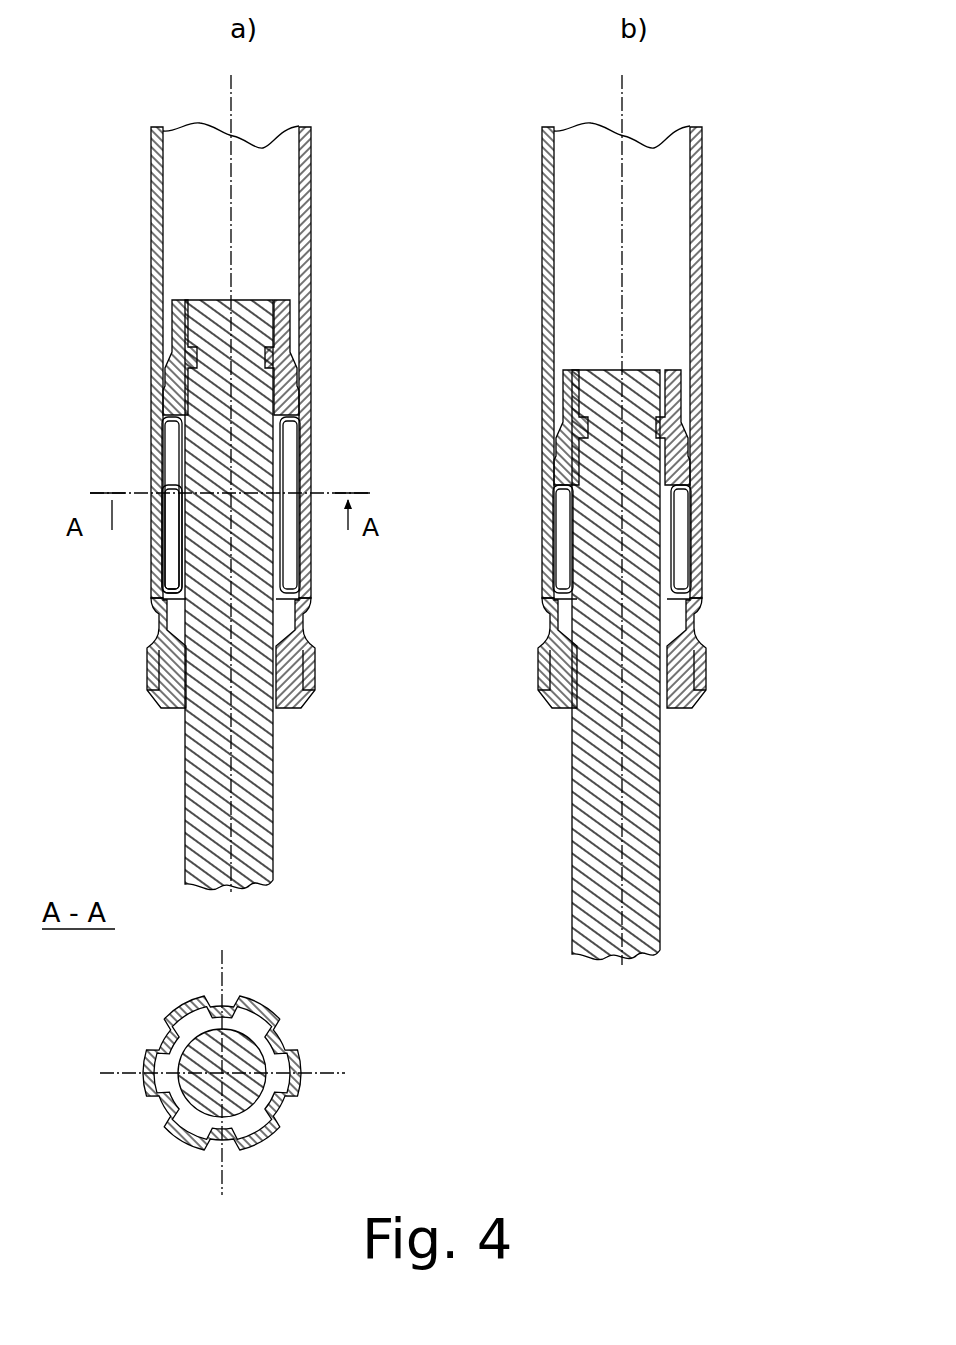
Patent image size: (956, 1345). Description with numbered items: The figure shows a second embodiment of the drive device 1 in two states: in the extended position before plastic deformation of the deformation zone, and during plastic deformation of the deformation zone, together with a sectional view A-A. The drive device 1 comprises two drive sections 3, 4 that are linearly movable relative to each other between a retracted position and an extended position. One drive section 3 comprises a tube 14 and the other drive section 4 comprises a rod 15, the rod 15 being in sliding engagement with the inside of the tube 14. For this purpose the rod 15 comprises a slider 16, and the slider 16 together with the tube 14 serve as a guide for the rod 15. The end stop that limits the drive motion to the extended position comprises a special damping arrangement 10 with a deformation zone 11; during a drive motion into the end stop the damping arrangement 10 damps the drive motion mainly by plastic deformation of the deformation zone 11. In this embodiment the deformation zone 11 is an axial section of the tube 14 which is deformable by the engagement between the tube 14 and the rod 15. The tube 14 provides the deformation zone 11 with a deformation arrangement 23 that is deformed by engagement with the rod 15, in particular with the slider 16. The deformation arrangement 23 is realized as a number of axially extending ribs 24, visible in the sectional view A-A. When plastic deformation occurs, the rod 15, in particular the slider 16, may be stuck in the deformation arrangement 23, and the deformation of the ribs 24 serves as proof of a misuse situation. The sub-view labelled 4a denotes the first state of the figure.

The drive device 1 is at (105, 215).
The drive section 3 is at (481, 638).
The tube 14 is at (312, 272).
The drive section 4 is at (488, 708).
The rod 15 is at (258, 795).
The snap head of rod 4a is at (502, 392).
The slider 16 is at (312, 395).
The damping arrangement 10 is at (527, 496).
The deformation zone 11 is at (426, 803).
The deformation arrangement 23 is at (426, 803).
The ribs 24 is at (541, 545).